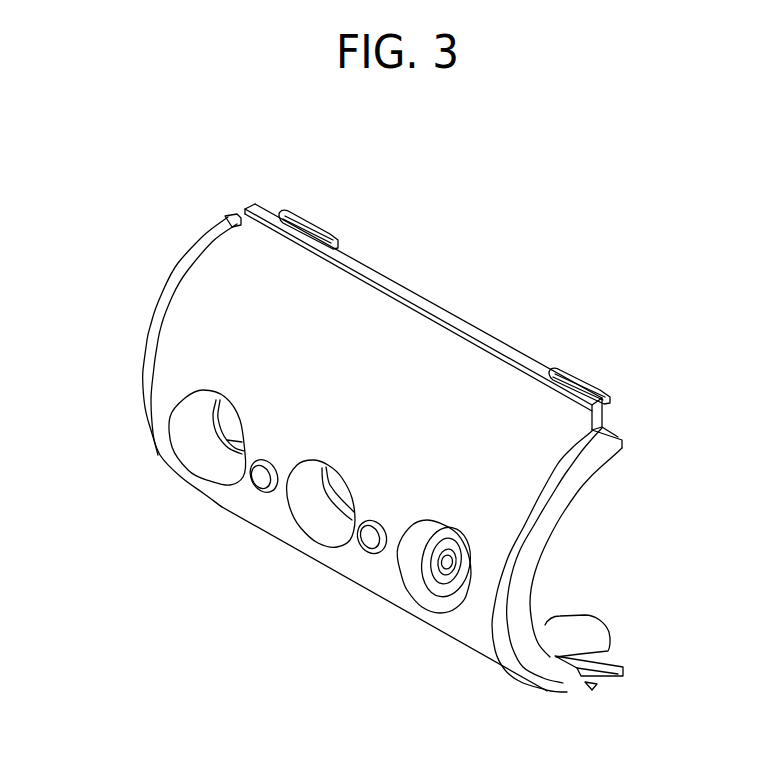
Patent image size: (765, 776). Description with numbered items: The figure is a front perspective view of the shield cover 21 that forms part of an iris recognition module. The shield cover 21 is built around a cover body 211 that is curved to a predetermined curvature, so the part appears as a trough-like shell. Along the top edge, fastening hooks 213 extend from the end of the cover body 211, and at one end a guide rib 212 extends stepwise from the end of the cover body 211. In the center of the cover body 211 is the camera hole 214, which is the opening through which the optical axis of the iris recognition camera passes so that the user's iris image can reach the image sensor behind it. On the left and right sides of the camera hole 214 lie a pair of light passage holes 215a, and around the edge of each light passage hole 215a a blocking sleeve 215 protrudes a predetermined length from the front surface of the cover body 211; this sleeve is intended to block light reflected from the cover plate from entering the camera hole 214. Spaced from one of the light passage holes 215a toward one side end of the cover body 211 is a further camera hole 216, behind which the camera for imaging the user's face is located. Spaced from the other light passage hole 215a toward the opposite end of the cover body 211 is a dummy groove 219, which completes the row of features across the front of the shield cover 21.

The shield cover 21 is at (489, 194).
The cover body 211 is at (473, 634).
The guide rib 212 is at (609, 674).
The fastening hook 213 is at (312, 224).
The camera hole 214 is at (308, 531).
The blocking sleeve 215 is at (262, 492).
The light passage hole 215a is at (258, 481).
The camera hole 216 is at (193, 388).
The dummy groove 219 is at (424, 598).